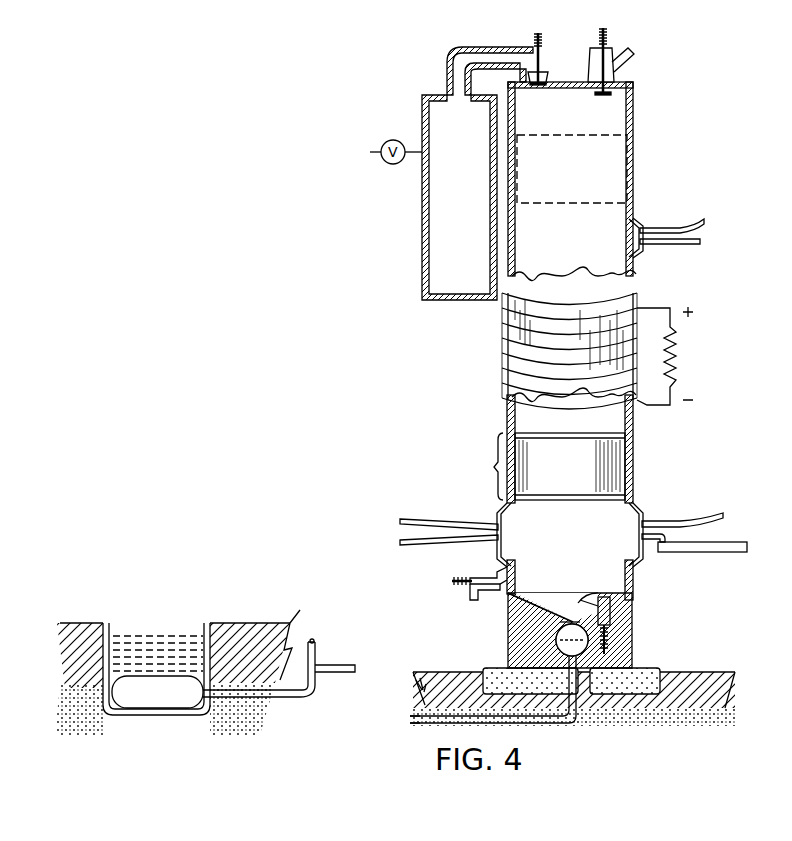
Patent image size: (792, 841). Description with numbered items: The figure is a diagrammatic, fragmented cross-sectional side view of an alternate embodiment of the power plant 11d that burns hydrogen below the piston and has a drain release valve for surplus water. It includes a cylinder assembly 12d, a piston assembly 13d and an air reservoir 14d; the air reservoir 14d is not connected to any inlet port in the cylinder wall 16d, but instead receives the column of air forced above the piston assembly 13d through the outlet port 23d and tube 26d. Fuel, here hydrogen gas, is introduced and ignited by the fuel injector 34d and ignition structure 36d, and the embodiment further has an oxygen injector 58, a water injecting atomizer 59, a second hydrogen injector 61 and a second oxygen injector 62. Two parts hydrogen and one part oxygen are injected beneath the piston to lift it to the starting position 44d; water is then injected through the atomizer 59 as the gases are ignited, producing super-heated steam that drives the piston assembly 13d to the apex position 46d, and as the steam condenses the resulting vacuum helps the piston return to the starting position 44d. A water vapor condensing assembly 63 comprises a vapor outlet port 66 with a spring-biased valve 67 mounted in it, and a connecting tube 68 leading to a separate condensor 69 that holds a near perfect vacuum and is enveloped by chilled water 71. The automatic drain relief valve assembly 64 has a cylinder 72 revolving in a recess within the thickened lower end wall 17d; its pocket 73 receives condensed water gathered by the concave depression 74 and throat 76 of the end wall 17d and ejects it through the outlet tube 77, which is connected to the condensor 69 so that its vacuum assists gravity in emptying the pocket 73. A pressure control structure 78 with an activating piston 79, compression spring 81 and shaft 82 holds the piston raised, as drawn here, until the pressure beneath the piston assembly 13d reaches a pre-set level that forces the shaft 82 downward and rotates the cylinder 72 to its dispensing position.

The power plant 11d is at (662, 295).
The cylinder assembly 12d is at (636, 118).
The piston assembly 13d is at (612, 473).
The air reservoir 14d is at (411, 249).
The cylinder wall 16d is at (506, 431).
The thickened lower end wall 17d is at (622, 608).
The outlet port 23d is at (549, 80).
The tube 26d is at (455, 68).
The fuel injector 34d is at (690, 520).
The ignition structure 36d is at (700, 552).
The starting position 44d is at (475, 466).
The apex position 46d is at (636, 135).
The oxygen injector 58 is at (418, 544).
The water injecting atomizer 59 is at (432, 519).
The second hydrogen injector 61 is at (682, 226).
The second oxygen injector 62 is at (672, 243).
The water vapor condensing assembly 63 is at (243, 610).
The automatic drain relief valve assembly 64 is at (616, 630).
The vapor outlet port 66 is at (500, 568).
The spring-biased valve 67 is at (457, 588).
The connecting tube 68 is at (470, 603).
The separate condensor 69 is at (118, 696).
The chilled water 71 is at (155, 645).
The cylinder 72 is at (555, 661).
The pocket 73 is at (556, 637).
The concave depression 74 is at (580, 600).
The throat 76 is at (560, 620).
The outlet tube 77 is at (580, 722).
The pressure control structure 78 is at (630, 598).
The activating piston 79 is at (565, 625).
The compression spring 81 is at (612, 627).
The shaft 82 is at (612, 646).